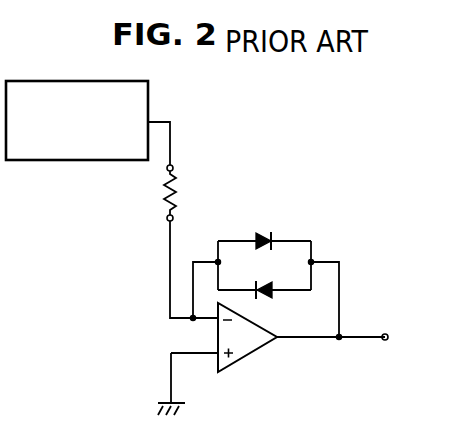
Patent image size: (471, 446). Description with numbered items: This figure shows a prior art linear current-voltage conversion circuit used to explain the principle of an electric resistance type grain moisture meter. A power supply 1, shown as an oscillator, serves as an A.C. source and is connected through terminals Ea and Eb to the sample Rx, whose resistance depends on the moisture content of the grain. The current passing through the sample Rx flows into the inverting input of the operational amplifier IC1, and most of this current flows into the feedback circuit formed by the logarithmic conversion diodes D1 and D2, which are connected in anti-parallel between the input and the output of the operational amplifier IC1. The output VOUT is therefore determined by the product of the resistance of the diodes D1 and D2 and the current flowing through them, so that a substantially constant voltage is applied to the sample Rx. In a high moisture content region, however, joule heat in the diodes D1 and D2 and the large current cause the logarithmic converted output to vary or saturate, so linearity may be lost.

The power supply 1 is at (78, 162).
The first terminal voltage point Ea is at (167, 169).
The second terminal voltage point Eb is at (167, 218).
The sample Rx is at (175, 184).
The logarithmic conversion diode D1 is at (266, 232).
The logarithmic conversion diode D2 is at (264, 298).
The operational amplifier IC1 is at (247, 337).
The output VOUT is at (411, 339).